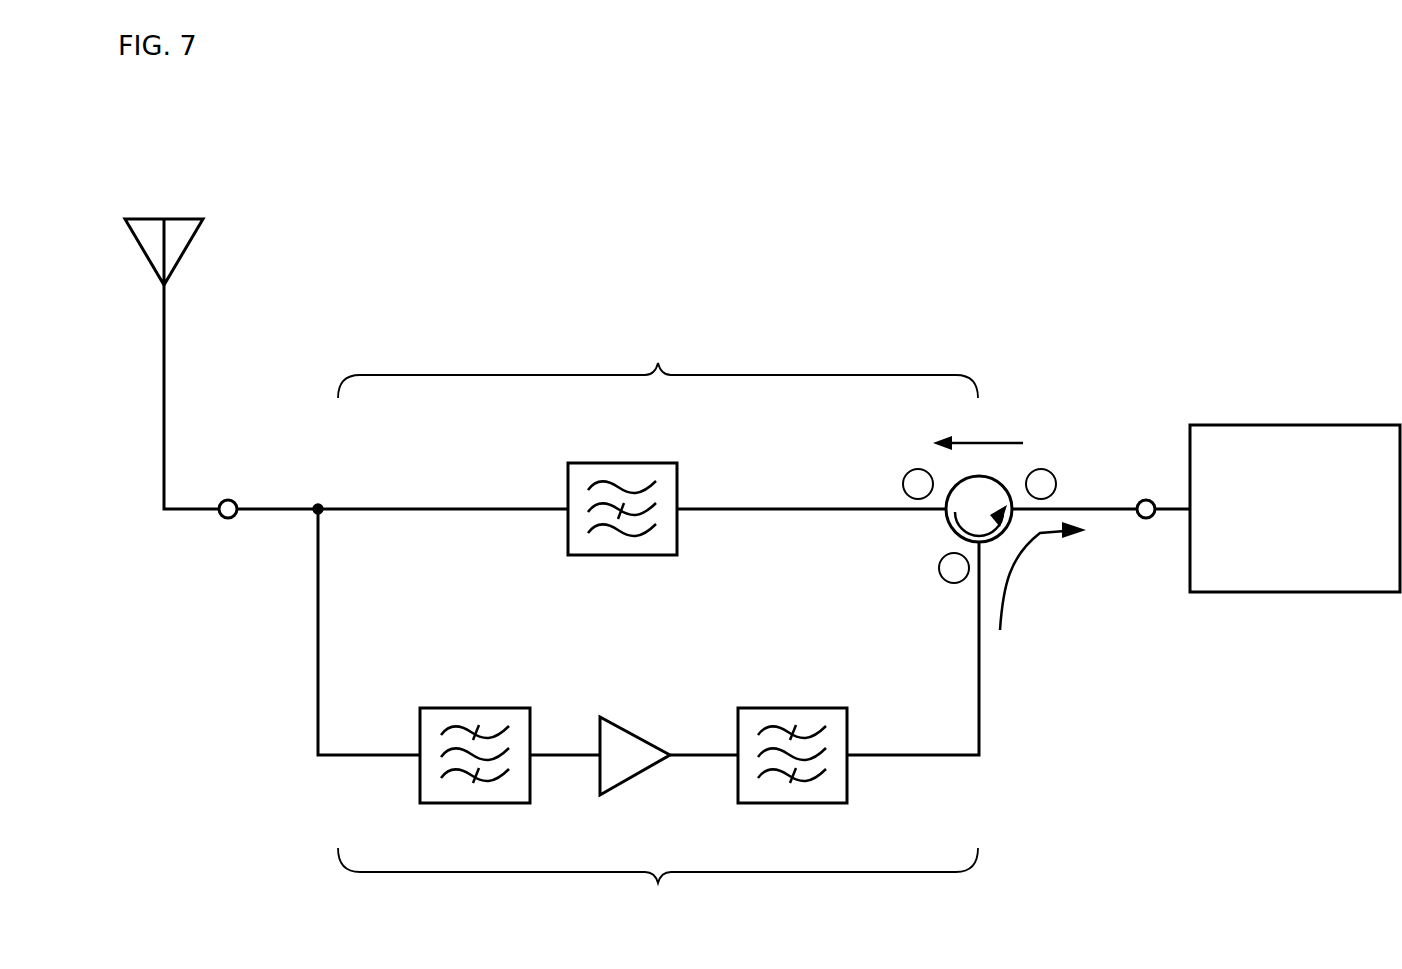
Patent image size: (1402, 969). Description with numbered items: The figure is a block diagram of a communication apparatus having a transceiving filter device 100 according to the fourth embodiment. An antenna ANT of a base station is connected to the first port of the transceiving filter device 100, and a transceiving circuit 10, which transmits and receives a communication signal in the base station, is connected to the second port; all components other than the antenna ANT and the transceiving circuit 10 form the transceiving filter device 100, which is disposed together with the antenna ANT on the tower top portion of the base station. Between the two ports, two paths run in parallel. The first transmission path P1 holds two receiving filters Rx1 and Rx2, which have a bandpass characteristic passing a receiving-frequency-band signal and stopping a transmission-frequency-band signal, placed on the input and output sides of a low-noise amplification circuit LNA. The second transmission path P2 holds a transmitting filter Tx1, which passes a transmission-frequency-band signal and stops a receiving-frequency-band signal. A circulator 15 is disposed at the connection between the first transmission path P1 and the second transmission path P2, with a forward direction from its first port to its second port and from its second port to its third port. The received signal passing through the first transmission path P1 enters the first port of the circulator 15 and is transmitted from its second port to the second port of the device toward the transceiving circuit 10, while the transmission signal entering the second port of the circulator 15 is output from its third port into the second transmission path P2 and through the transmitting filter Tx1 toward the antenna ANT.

The transceiving filter device 100 is at (840, 260).
The transceiving circuit 10 is at (1310, 425).
The circulator 15 is at (1000, 480).
The antenna ANT is at (204, 219).
The transmitting filter Tx1 is at (622, 491).
The receiving filter Rx1 is at (475, 738).
The receiving filter Rx2 is at (792, 738).
The low-noise amplification circuit LNA is at (635, 735).
The first transmission path P1 is at (658, 889).
The second transmission path P2 is at (658, 361).